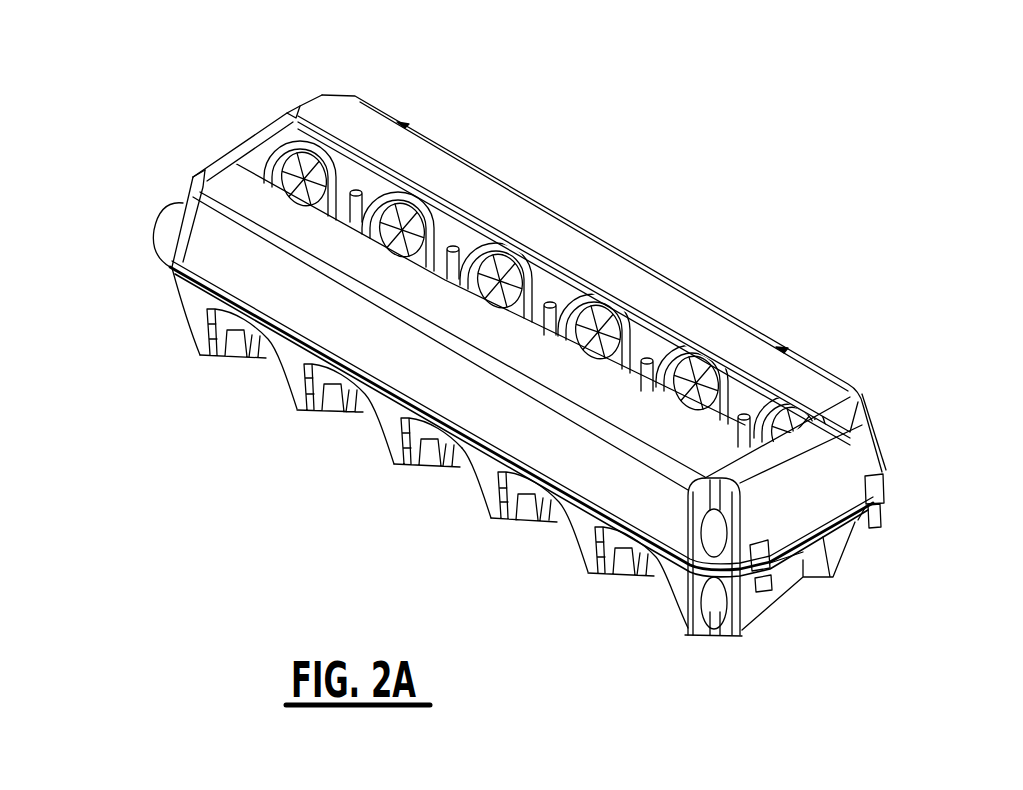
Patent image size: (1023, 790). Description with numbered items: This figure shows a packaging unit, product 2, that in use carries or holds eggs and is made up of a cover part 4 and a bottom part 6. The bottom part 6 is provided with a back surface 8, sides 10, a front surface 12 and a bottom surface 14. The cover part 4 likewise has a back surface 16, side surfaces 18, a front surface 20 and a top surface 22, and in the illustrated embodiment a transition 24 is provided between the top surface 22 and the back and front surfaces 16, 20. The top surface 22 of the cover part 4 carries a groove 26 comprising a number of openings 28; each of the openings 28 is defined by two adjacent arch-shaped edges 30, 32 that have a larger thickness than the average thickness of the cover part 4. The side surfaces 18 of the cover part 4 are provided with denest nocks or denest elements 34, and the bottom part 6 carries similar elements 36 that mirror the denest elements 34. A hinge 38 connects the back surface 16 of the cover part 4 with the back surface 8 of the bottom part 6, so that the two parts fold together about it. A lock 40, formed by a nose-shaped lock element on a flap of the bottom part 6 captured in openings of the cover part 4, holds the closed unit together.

The product 2 is at (722, 133).
The cover part 4 is at (183, 147).
The bottom part 6 is at (197, 364).
The back surface 8 is at (387, 440).
The sides 10 is at (850, 562).
The front surface 12 is at (898, 405).
The bottom surface 14 is at (697, 647).
The back surface 16 is at (322, 310).
The side surfaces 18 is at (853, 453).
The front surface 20 is at (778, 330).
The top surface 22 is at (507, 200).
The transition 24 is at (207, 202).
The groove 26 is at (283, 110).
The openings 28 is at (387, 217).
The arch-shaped edge 30 is at (610, 325).
The arch-shaped edge 32 is at (555, 332).
The denest elements 34 is at (883, 473).
The similar elements 36 is at (880, 517).
The hinge 38 is at (423, 414).
The lock 40 is at (885, 313).